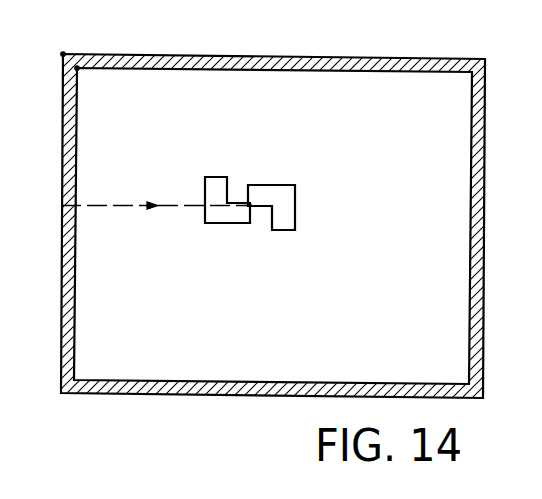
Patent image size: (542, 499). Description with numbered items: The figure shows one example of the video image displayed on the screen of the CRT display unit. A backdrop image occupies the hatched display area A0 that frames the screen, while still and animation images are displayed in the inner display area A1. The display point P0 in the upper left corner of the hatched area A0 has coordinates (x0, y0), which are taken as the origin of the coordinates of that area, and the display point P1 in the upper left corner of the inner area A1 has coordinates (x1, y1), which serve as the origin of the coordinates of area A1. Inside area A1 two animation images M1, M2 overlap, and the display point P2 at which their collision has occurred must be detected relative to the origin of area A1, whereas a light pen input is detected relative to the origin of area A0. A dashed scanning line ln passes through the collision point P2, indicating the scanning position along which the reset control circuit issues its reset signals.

The hatched display area A0 is at (398, 58).
The display area A1 is at (459, 112).
The display point P0 is at (63, 52).
The display point P1 is at (78, 70).
The scan line ln is at (143, 203).
The animation image M1 is at (214, 180).
The animation image M2 is at (284, 190).
The display point P2 is at (249, 210).